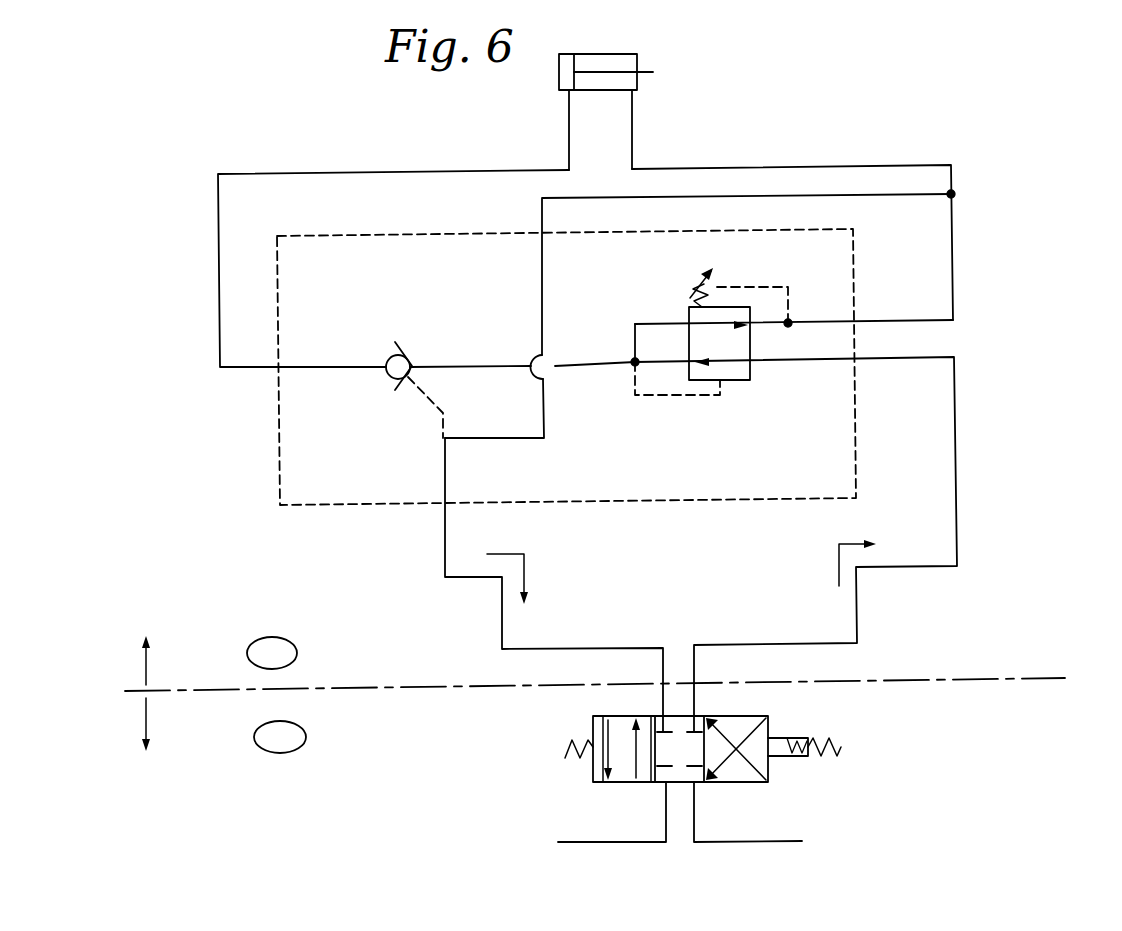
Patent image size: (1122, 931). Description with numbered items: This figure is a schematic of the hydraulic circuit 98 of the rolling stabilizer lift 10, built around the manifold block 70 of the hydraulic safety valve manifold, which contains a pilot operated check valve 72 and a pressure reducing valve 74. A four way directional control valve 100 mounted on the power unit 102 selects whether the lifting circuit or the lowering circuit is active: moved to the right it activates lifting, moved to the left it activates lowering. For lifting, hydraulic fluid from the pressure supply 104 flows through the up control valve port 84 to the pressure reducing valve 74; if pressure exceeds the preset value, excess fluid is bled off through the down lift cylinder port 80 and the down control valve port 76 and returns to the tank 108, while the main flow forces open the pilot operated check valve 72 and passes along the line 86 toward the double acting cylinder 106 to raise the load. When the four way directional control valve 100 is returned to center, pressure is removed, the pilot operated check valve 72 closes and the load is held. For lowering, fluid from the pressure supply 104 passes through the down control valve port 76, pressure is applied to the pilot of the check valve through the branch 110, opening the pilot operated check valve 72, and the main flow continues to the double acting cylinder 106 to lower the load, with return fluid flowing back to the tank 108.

The double acting cylinder 106 is at (613, 53).
The hydraulic circuit 98 is at (975, 125).
The supply passage 86 is at (277, 367).
The down lift cylinder port 80 is at (543, 232).
The manifold block 70 is at (853, 258).
The pilot operated check valve 72 is at (392, 378).
The branch to pilot of check valve 110 is at (440, 413).
The down control valve port 76 is at (443, 507).
The up control valve port 84 is at (852, 356).
The pressure reducing valve 74 is at (740, 380).
The rolling stabilizer lift 10 is at (272, 653).
The power unit 102 is at (280, 737).
The four way directional control valve 100 is at (773, 770).
The tank 108 is at (572, 843).
The pressure supply 104 is at (767, 842).